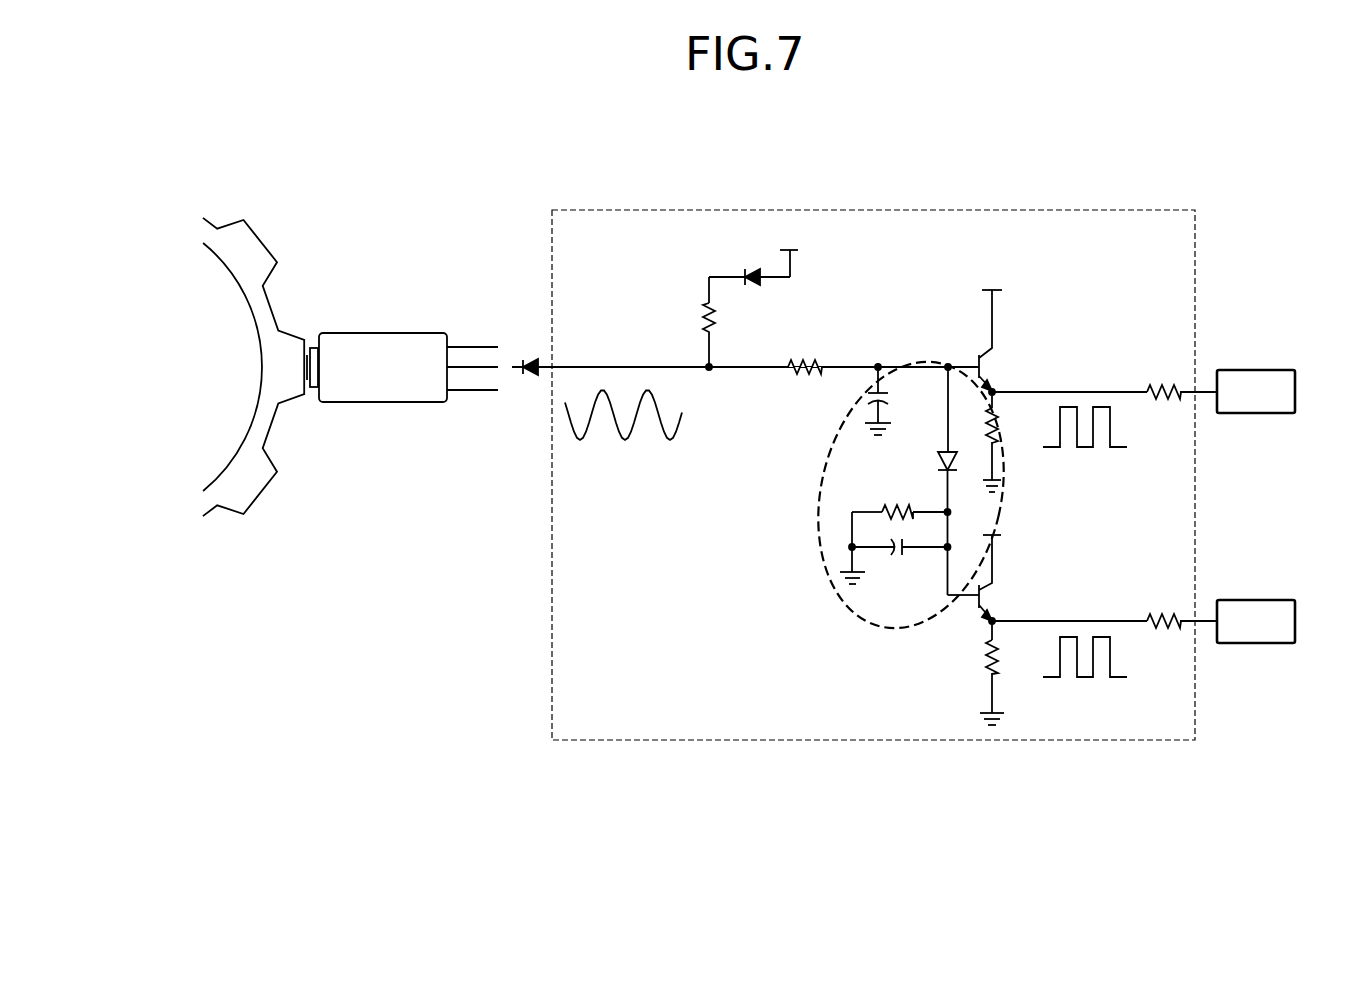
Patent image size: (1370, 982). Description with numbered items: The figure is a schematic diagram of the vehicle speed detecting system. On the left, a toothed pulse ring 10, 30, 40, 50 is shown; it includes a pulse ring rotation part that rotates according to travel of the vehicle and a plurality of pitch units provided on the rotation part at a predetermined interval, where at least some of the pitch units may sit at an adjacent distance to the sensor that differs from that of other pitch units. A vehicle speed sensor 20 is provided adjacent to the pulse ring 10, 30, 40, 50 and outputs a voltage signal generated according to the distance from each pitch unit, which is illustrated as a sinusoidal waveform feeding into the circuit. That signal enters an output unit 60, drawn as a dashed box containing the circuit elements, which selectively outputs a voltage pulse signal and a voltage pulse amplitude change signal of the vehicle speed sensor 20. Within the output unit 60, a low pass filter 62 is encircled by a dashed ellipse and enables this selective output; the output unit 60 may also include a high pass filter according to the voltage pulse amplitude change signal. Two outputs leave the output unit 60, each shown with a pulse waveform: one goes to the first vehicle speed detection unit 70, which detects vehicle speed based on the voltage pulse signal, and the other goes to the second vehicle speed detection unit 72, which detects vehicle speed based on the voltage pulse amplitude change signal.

The pulse ring 10 is at (348, 367).
The pulse ring 30 is at (348, 367).
The pulse ring 40 is at (348, 367).
The pulse ring 50 is at (237, 410).
The vehicle speed sensor 20 is at (393, 335).
The output unit 60 is at (864, 452).
The low pass filter 62 is at (817, 532).
The first vehicle speed detection unit 70 is at (1257, 370).
The second vehicle speed detection unit 72 is at (1257, 600).